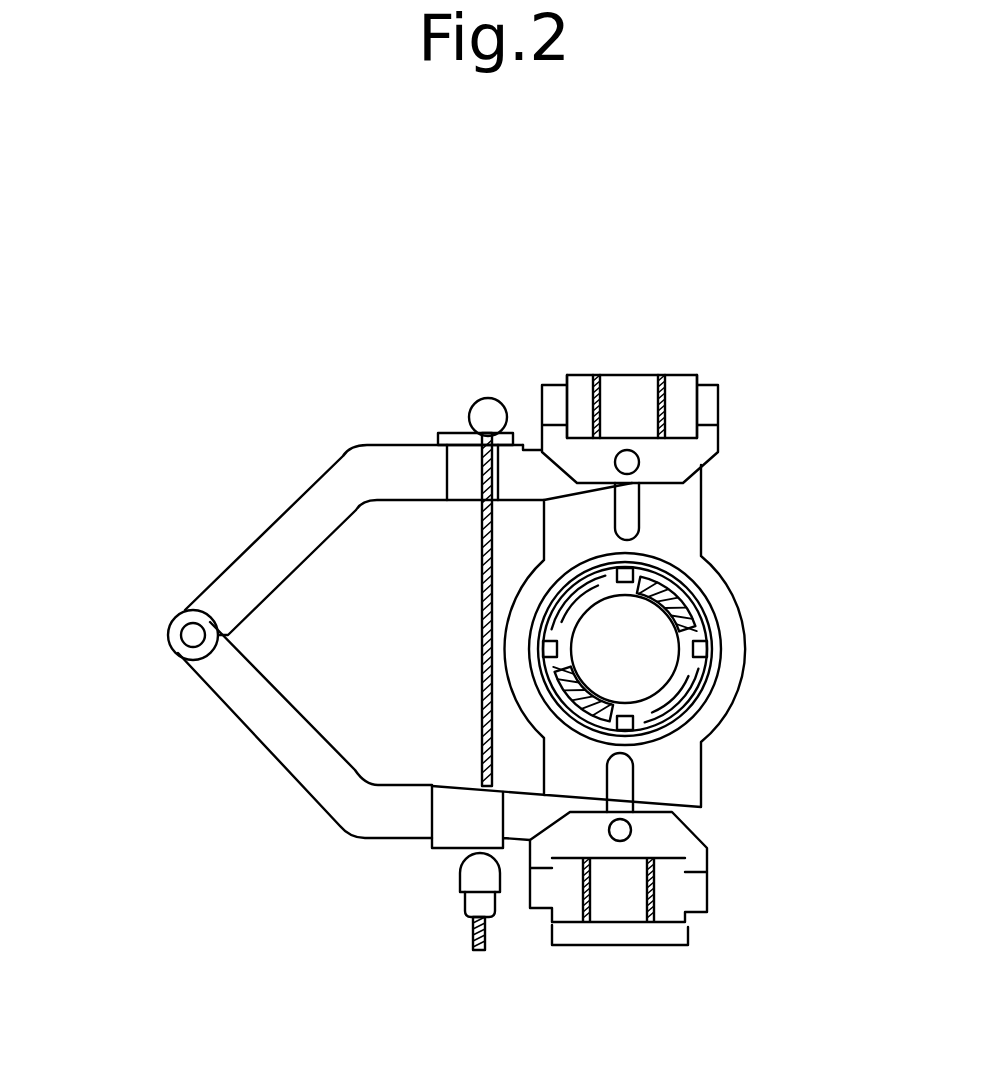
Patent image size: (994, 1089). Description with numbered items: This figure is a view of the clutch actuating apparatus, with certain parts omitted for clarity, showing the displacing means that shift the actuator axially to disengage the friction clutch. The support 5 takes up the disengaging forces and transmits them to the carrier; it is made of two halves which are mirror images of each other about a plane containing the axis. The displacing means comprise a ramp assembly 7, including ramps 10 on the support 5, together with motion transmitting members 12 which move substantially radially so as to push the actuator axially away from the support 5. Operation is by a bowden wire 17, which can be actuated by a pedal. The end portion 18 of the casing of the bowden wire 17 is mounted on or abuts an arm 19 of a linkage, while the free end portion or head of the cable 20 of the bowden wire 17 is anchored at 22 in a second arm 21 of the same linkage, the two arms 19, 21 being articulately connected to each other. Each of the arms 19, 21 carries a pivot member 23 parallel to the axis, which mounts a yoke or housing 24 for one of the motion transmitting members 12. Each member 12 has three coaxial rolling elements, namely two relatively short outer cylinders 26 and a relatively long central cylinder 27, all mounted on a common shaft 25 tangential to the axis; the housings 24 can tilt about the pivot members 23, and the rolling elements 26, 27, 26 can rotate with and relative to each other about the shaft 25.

The support 5 is at (725, 675).
The ramp assembly 7 is at (195, 737).
The ramps 10 is at (630, 810).
The motion transmitting members 12 is at (617, 950).
The bowden wire 17 is at (473, 922).
The end portion of the casing of the bowden wire 18 is at (475, 872).
The arm 19 is at (280, 743).
The cable 20 is at (482, 670).
The arm 21 is at (255, 565).
The anchoring location 22 is at (447, 437).
The pivot member 23 is at (628, 833).
The yoke or housing 24 is at (680, 846).
The common shaft 25 is at (600, 395).
The outer rolling elements or cylinders 26 is at (575, 405).
The centrally located rolling element or cylinder 27 is at (636, 393).